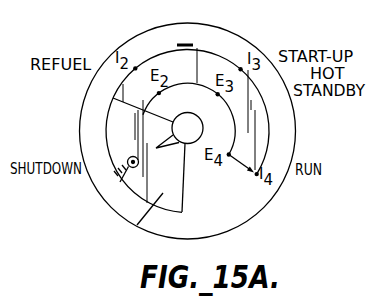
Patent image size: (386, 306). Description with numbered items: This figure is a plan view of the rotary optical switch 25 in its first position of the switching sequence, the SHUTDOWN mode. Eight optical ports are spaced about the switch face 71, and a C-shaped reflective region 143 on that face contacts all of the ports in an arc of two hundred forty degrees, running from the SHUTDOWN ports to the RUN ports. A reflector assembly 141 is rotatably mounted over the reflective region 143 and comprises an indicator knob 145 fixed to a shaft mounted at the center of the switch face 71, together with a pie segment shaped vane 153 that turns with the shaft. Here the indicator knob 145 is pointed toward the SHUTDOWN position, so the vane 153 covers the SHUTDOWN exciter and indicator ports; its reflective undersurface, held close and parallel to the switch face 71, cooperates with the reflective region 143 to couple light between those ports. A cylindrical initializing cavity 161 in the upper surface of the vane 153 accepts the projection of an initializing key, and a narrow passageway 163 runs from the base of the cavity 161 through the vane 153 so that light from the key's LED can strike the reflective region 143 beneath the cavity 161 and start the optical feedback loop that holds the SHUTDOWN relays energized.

The optical switch 25 is at (246, 32).
The switch face 71 is at (197, 20).
The reflector assembly 141 is at (96, 137).
The reflective region 143 is at (265, 123).
The indicator knob 145 is at (171, 97).
The vane 153 is at (137, 225).
The initializing cavity 161 is at (120, 182).
The passageway 163 is at (131, 156).